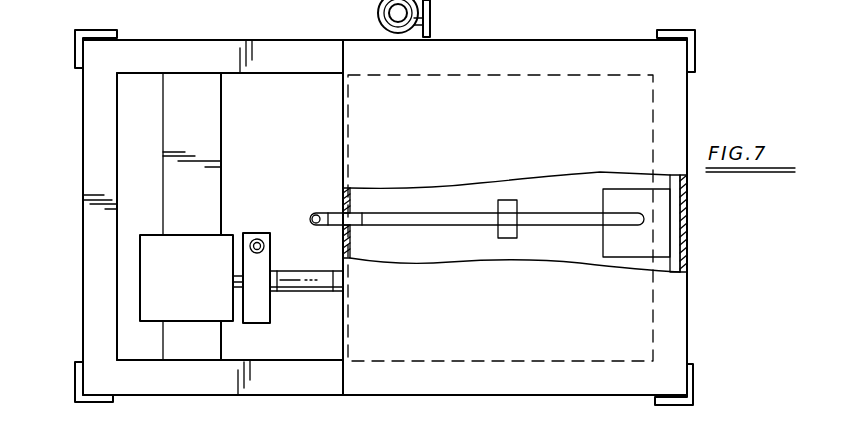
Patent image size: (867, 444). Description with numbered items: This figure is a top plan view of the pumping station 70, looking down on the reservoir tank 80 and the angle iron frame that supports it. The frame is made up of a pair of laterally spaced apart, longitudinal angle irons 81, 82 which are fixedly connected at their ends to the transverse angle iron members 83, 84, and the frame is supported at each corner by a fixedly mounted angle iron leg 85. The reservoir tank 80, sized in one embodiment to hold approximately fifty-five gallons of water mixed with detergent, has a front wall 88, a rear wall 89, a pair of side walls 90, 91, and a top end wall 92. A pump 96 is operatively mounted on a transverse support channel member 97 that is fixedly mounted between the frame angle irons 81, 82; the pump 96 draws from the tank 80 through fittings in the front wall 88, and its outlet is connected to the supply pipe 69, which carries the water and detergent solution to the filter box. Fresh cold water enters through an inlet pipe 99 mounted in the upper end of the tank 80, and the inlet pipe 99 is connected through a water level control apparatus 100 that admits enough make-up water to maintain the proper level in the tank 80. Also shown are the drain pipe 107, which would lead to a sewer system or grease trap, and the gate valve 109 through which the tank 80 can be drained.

The supply pipe 69 is at (257, 238).
The pumping station 70 is at (596, 38).
The reservoir tank 80 is at (546, 56).
The longitudinal angle iron 81 is at (197, 48).
The longitudinal angle iron 82 is at (305, 369).
The transverse angle iron member 83 is at (93, 160).
The transverse angle iron member 84 is at (653, 120).
The angle iron leg 85 is at (98, 28).
The front wall 88 is at (343, 120).
The rear wall 89 is at (687, 226).
The side wall 90 is at (543, 398).
The side wall 91 is at (640, 40).
The top end wall 92 is at (670, 100).
The pump 96 is at (212, 290).
The transverse support channel member 97 is at (213, 137).
The inlet pipe 99 is at (312, 219).
The water level control apparatus 100 is at (620, 200).
The pipe 107 is at (384, 11).
The gate valve 109 is at (431, 13).